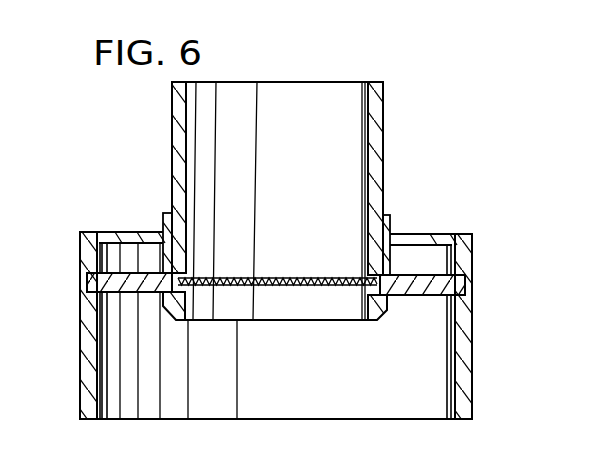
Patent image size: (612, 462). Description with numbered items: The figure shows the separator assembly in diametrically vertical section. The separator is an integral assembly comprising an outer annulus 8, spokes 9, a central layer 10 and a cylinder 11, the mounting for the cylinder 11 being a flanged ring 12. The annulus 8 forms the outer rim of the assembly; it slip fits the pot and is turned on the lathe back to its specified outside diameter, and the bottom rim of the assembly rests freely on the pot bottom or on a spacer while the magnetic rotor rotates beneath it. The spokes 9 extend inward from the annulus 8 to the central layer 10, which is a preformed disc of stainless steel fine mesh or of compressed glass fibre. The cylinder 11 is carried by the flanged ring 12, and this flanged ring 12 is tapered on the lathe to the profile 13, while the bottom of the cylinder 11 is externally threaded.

The annulus 8 is at (472, 312).
The spokes 9 is at (128, 292).
The central layer 10 is at (227, 291).
The cylinder 11 is at (353, 144).
The flanged ring 12 is at (391, 219).
The profile 13 is at (382, 316).